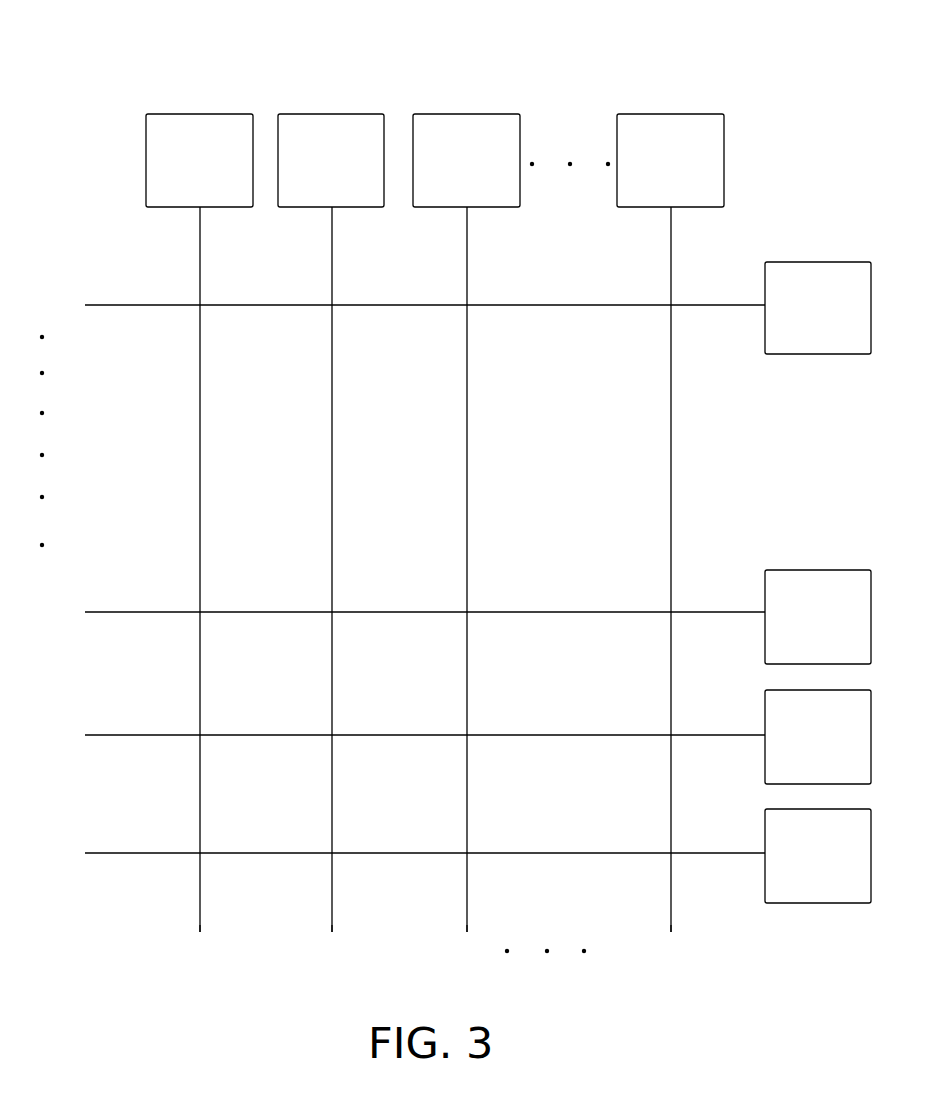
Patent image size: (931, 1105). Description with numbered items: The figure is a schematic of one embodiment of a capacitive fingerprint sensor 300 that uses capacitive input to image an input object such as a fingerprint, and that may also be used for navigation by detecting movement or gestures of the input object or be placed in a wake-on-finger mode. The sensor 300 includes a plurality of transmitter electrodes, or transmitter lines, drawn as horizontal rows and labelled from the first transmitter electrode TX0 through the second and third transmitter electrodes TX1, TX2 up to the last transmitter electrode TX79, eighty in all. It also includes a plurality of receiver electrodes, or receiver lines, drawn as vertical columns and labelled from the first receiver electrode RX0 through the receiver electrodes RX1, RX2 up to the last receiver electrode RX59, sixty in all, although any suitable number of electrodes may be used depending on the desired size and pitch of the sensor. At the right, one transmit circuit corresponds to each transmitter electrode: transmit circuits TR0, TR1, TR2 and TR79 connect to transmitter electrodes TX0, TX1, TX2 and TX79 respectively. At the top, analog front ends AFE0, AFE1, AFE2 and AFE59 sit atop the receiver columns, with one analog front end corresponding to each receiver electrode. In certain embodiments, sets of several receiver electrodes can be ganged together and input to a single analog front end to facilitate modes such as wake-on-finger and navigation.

The fingerprint sensor 300 is at (166, 72).
The analog front end AFE0 is at (199, 523).
The analog front end AFE1 is at (331, 523).
The analog front end AFE2 is at (466, 523).
The analog front end AFE59 is at (670, 523).
The transmitter electrode TX79 is at (384, 298).
The transmitter electrode TX2 is at (390, 605).
The transmitter electrode TX1 is at (392, 725).
The transmitter electrode TX0 is at (392, 843).
The transmit circuit TR79 is at (818, 308).
The transmit circuit TR2 is at (818, 617).
The transmit circuit TR1 is at (818, 737).
The transmit circuit TR0 is at (818, 856).
The receiver electrode RX0 is at (183, 948).
The receiver electrode RX1 is at (314, 948).
The receiver electrode RX2 is at (448, 948).
The receiver electrode RX59 is at (652, 948).